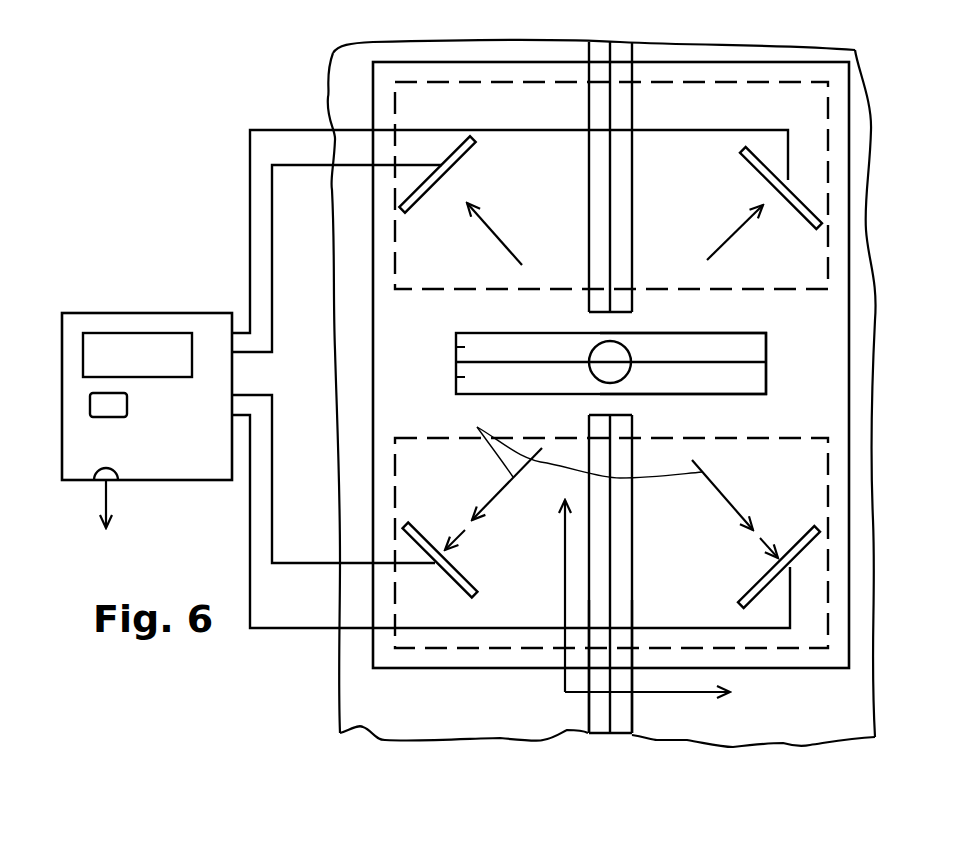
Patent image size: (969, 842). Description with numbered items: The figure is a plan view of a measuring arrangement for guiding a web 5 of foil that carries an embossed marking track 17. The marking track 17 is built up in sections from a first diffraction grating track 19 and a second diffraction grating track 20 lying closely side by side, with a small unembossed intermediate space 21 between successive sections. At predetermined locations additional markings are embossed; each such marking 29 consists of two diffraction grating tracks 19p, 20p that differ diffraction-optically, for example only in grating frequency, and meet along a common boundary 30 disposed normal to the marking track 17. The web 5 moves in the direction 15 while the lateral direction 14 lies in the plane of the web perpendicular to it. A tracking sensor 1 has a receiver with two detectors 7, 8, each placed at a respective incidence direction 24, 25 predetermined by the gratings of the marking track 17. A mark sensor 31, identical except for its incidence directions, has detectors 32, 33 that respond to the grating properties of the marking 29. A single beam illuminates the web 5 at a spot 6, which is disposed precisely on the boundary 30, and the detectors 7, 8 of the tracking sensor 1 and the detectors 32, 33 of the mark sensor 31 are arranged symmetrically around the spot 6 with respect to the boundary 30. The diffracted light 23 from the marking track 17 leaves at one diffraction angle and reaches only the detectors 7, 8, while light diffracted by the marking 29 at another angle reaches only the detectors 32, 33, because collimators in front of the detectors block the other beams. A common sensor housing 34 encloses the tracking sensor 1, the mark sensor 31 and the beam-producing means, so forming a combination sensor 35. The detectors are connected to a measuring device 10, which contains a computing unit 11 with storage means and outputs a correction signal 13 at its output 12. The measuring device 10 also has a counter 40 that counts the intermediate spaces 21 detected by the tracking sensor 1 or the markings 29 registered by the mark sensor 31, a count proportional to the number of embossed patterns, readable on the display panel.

The tracking sensor 1 is at (797, 474).
The web of foil 5 is at (360, 727).
The spot 6 is at (630, 373).
The detector 7 is at (458, 583).
The detector 8 is at (772, 580).
The measuring device 10 is at (72, 320).
The computing unit 11 is at (120, 342).
The output 12 is at (113, 468).
The correction signal 13 is at (137, 505).
The lateral direction 14 is at (703, 697).
The direction of the web 15 is at (565, 545).
The marking track 17 is at (588, 755).
The first diffraction grating track 19 is at (600, 715).
The second diffraction grating track 20 is at (628, 715).
The diffraction grating track 19p is at (723, 238).
The diffraction grating track 20p is at (463, 377).
The intermediate space 21 is at (618, 327).
The diffracted light 23 is at (477, 427).
The incidence direction 24 is at (465, 530).
The incidence direction 25 is at (767, 553).
The marking 29 is at (753, 342).
The boundary 30 is at (737, 365).
The mark sensor 31 is at (410, 270).
The detector 32 is at (755, 153).
The detector 33 is at (465, 155).
The sensor housing 34 is at (373, 102).
The combination sensor 35 is at (387, 425).
The counter 40 is at (97, 405).